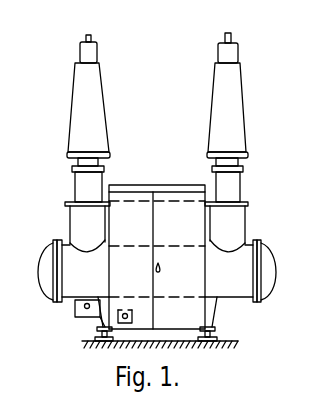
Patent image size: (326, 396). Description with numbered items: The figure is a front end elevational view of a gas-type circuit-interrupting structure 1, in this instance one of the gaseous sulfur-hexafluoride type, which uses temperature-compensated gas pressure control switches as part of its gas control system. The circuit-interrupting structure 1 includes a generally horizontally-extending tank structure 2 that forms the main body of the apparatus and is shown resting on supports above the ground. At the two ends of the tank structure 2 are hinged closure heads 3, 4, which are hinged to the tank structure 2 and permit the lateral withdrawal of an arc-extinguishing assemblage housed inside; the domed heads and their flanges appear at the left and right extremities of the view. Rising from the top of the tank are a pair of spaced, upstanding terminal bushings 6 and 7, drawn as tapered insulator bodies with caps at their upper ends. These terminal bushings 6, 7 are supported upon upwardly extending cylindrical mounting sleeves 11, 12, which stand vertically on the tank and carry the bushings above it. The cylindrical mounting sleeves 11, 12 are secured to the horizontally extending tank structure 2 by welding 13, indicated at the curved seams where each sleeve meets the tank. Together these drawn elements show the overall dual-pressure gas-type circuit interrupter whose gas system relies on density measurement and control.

The circuit-interrupting structure 1 is at (162, 39).
The tank structure 2 is at (232, 300).
The hinged closure head 3 is at (268, 258).
The hinged closure head 4 is at (41, 262).
The terminal bushing 6 is at (102, 89).
The terminal bushing 7 is at (213, 88).
The cylindrical mounting sleeve 11 is at (73, 239).
The cylindrical mounting sleeve 12 is at (248, 218).
The welding 13 is at (94, 253).